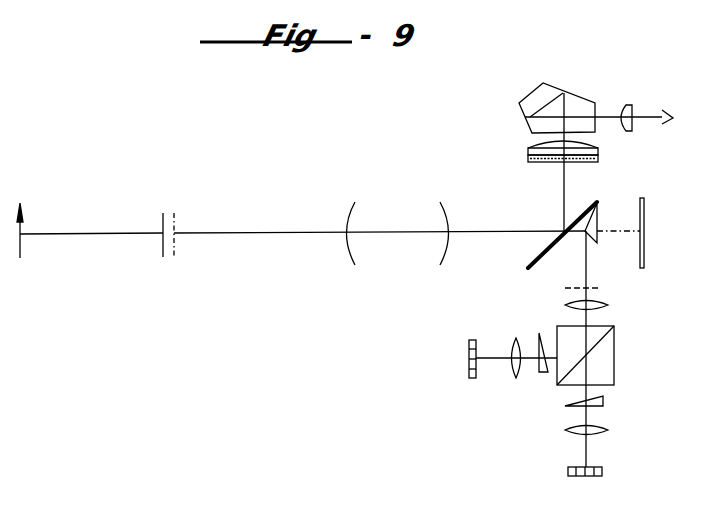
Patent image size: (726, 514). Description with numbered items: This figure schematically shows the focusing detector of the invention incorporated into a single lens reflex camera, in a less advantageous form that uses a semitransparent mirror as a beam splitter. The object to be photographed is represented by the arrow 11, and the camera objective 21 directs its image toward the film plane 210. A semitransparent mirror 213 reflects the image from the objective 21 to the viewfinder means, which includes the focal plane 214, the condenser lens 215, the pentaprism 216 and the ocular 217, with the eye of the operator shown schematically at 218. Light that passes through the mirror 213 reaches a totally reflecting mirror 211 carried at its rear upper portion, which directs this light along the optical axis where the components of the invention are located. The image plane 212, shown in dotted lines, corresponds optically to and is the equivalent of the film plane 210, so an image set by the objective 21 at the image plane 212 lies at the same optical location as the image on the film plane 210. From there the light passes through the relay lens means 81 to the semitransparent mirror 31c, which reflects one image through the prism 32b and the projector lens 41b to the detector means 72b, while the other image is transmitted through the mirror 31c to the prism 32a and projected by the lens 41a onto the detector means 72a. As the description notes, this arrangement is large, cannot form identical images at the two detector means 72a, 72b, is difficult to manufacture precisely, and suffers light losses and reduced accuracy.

The arrow 11 is at (21, 250).
The objective 21 is at (378, 268).
The semitransparent mirror 213 is at (540, 256).
The totally reflecting mirror 211 is at (590, 237).
The film plane 210 is at (645, 212).
The pentaprism 216 is at (545, 85).
The ocular 217 is at (627, 105).
The eye of the operator 218 is at (667, 125).
The condenser lens 215 is at (527, 148).
The focal plane 214 is at (533, 162).
The image plane 212 is at (600, 288).
The relay lens means 81 is at (608, 305).
The semitransparent mirror 31c is at (617, 351).
The prism 32a is at (605, 400).
The projector lens 41a is at (608, 432).
The detector means 72a is at (603, 472).
The detector means 72b is at (473, 338).
The projector lens 41b is at (516, 337).
The prism 32b is at (542, 374).